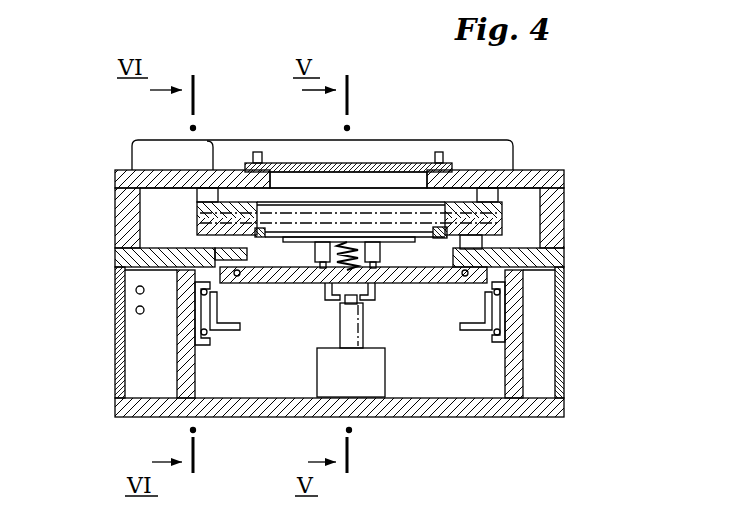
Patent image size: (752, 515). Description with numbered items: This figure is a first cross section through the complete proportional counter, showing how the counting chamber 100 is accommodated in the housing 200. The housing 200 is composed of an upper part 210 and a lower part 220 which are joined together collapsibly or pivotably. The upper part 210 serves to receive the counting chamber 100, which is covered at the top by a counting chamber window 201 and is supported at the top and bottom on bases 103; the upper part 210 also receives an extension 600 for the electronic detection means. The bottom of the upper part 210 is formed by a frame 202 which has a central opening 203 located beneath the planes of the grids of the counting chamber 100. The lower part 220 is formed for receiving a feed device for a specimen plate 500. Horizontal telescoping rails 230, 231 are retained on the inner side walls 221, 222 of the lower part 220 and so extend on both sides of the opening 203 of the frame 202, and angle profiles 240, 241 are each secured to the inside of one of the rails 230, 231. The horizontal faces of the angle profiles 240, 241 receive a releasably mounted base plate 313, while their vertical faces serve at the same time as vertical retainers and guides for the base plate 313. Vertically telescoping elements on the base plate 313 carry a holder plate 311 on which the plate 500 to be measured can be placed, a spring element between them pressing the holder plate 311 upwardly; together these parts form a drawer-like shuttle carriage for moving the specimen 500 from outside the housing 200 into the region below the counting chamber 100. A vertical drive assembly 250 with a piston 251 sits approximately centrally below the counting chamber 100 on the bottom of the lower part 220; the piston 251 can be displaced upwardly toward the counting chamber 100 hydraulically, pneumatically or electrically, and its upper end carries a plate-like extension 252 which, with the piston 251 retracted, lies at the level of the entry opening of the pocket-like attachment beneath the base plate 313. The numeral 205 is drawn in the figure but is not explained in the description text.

The counting chamber 100 is at (430, 208).
The bases 103 is at (473, 243).
The housing 200 is at (594, 141).
The counting chamber window 201 is at (372, 172).
The frame 202 is at (555, 262).
The central opening 203 is at (250, 258).
The chuck body 205 is at (274, 163).
The upper part 210 is at (553, 203).
The lower part 220 is at (557, 338).
The inner side wall 221 is at (522, 375).
The inner side wall 222 is at (180, 375).
The telescoping rail 230 is at (203, 313).
The telescoping rail 231 is at (497, 303).
The angle profile 240 is at (238, 331).
The angle profile 241 is at (472, 331).
The vertical drive assembly 250 is at (372, 387).
The piston 251 is at (352, 327).
The plate-like extension 252 is at (335, 290).
The holder plate 311 is at (305, 238).
The base plate 313 is at (410, 279).
The specimen plate 500 is at (338, 210).
The extension 600 is at (130, 153).